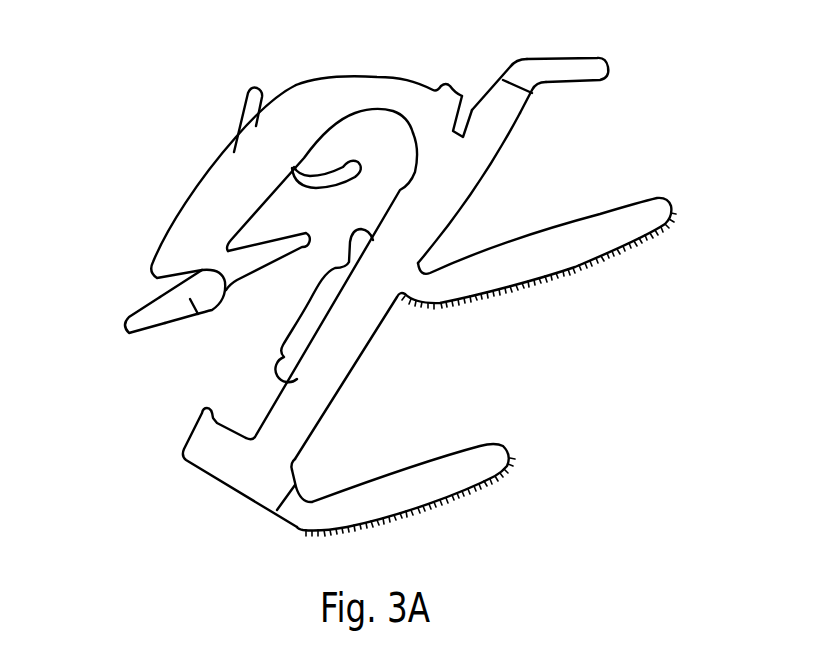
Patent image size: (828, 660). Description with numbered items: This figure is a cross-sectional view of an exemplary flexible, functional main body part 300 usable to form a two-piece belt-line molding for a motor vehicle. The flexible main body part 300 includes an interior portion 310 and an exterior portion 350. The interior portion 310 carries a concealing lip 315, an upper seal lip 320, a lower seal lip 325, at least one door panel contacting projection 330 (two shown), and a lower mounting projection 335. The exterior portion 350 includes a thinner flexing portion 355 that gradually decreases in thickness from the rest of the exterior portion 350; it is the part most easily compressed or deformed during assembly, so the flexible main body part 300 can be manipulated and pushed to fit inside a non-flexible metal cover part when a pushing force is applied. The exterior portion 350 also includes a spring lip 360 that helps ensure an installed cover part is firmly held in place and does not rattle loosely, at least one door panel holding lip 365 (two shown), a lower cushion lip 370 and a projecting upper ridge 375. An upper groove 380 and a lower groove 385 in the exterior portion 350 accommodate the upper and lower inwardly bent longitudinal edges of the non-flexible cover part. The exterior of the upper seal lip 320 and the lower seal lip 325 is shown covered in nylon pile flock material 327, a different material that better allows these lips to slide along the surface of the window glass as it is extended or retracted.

The flexible main body part 300 is at (544, 191).
The interior portion 310 is at (350, 350).
The concealing lip 315 is at (598, 78).
The upper seal lip 320 is at (652, 212).
The lower seal lip 325 is at (476, 466).
The nylon pile flock material 327 is at (617, 250).
The door panel contacting projection 330 is at (287, 334).
The lower mounting projection 335 is at (228, 468).
The exterior portion 350 is at (203, 212).
The thinner flexing portion 355 is at (397, 97).
The spring lip 360 is at (250, 121).
The door panel holding lip 365 is at (277, 246).
The lower cushion lip 370 is at (133, 326).
The projecting upper ridge 375 is at (455, 100).
The upper groove 380 is at (460, 138).
The lower groove 385 is at (218, 302).